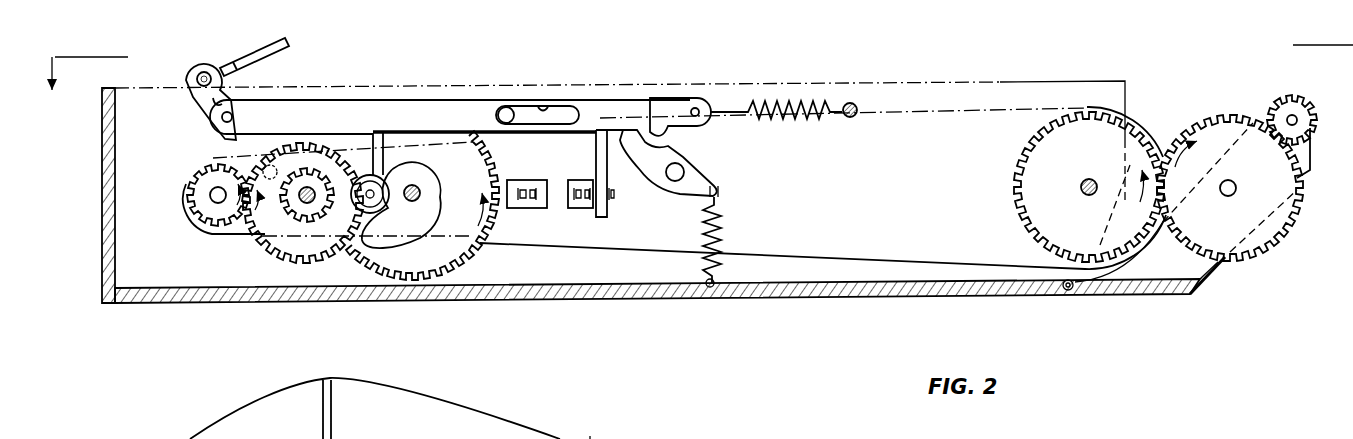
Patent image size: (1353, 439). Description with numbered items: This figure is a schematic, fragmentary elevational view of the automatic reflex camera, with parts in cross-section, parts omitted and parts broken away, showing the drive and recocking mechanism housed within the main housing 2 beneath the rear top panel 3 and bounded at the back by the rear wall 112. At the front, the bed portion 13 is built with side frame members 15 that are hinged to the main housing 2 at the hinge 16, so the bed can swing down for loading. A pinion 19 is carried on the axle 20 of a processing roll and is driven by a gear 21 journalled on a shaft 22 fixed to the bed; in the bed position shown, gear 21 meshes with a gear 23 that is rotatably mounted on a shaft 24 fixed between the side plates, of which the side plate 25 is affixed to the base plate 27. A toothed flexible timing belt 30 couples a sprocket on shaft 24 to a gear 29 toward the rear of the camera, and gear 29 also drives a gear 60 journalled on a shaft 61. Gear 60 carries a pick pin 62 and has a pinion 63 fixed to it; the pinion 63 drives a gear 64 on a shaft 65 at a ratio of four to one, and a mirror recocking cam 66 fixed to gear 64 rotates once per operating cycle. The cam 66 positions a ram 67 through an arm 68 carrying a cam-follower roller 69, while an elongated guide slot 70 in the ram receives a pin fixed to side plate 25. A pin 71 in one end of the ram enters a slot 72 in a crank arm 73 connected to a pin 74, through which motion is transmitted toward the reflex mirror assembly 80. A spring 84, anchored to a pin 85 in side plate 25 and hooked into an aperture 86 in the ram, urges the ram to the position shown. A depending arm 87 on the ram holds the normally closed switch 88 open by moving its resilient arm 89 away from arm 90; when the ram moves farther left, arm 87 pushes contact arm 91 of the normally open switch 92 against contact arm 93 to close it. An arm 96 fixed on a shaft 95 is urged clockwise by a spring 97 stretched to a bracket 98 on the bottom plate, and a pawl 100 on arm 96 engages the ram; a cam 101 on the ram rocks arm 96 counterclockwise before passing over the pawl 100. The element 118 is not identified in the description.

In FIG. 2, the main housing 2 is at (672, 293).
In FIG. 2, the rear top panel 3 is at (700, 80).
In FIG. 2, the bed portion 13 is at (1216, 281).
In FIG. 2, the side frame members 15 is at (1200, 268).
In FIG. 2, the hinge 16 is at (1066, 292).
In FIG. 2, the pinion 19 is at (1257, 114).
In FIG. 2, the axle 20 is at (1294, 115).
In FIG. 2, the gear 21 is at (1273, 240).
In FIG. 2, the shaft 22 is at (1236, 187).
In FIG. 2, the gear 23 is at (1113, 157).
In FIG. 2, the shaft 24 is at (1092, 178).
In FIG. 2, the side plate 25 is at (1098, 82).
In FIG. 2, the base plate 27 is at (855, 292).
In FIG. 2, the gear 29 is at (192, 224).
In FIG. 2, the belt 30 is at (908, 118).
In FIG. 2, the gear 60 is at (286, 249).
In FIG. 2, the shaft 61 is at (320, 208).
In FIG. 2, the pin 62 is at (275, 165).
In FIG. 2, the pinion 63 is at (283, 190).
In FIG. 2, the gear 64 is at (483, 178).
In FIG. 2, the shaft 65 is at (418, 188).
In FIG. 2, the mirror recocking cam 66 is at (418, 236).
In FIG. 2, the ram 67 is at (448, 98).
In FIG. 2, the arm 68 is at (373, 166).
In FIG. 2, the roller 69 is at (504, 106).
In FIG. 2, the guide slot 70 is at (548, 107).
In FIG. 2, the pin 71 is at (235, 114).
In FIG. 2, the slot 72 is at (228, 93).
In FIG. 2, the crank arm 73 is at (197, 112).
In FIG. 2, the pin 74 is at (192, 72).
In FIG. 2, the reflex mirror assembly 80 is at (267, 38).
In FIG. 2, the spring 84 is at (790, 100).
In FIG. 2, the pin 85 is at (852, 103).
In FIG. 2, the aperture 86 is at (697, 107).
In FIG. 2, the depending arm 87 is at (607, 163).
In FIG. 2, the switch 88 is at (576, 213).
In FIG. 2, the resilient arm 89 is at (610, 197).
In FIG. 2, the arm 90 is at (573, 180).
In FIG. 2, the contact arm 91 is at (540, 208).
In FIG. 2, the switch 92 is at (527, 213).
In FIG. 2, the contact arm 93 is at (506, 208).
In FIG. 2, the shaft 95 is at (684, 170).
In FIG. 2, the arm 96 is at (714, 183).
In FIG. 2, the spring 97 is at (720, 222).
In FIG. 2, the bracket 98 is at (712, 289).
In FIG. 2, the pawl 100 is at (628, 128).
In FIG. 2, the cam 101 is at (669, 128).
In FIG. 2, the rear wall 112 is at (100, 238).
In FIG. 3, the element 118 is at (603, 433).